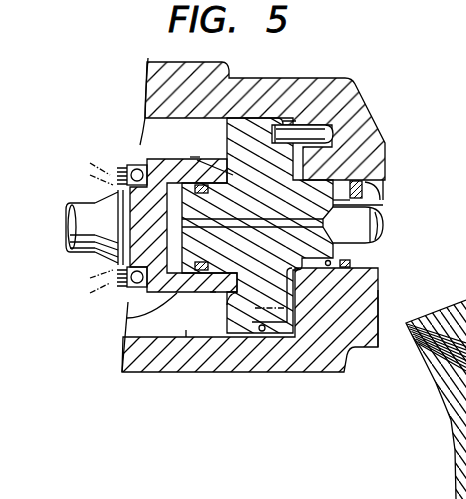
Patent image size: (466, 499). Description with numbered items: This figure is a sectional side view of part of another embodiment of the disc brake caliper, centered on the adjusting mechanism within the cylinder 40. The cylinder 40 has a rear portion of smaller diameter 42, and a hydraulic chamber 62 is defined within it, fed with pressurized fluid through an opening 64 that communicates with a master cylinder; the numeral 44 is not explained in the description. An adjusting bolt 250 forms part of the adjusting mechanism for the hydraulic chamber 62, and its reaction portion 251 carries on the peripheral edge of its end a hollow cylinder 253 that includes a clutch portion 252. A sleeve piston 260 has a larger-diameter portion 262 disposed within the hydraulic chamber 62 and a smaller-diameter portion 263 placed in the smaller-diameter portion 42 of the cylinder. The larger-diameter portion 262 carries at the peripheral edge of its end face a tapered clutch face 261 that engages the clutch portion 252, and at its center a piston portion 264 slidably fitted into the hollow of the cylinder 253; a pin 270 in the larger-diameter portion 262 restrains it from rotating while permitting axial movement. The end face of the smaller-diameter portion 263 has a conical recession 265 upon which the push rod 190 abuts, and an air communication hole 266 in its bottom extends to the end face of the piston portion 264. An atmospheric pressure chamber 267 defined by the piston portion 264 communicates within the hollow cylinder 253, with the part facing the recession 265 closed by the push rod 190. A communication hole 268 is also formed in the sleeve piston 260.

The cylinder 40 is at (152, 360).
The rear portion of smaller diameter 42 is at (330, 262).
The housing cover 44 is at (358, 112).
The hydraulic chamber 62 is at (186, 330).
The opening 64 is at (264, 333).
The push rod 190 is at (370, 220).
The adjusting bolt 250 is at (77, 189).
The reaction portion 251 is at (123, 200).
The clutch portion 252 is at (230, 300).
The hollow cylinder 253 is at (160, 157).
The sleeve piston 260 is at (260, 116).
The clutch face 261 is at (213, 150).
The larger-diameter portion 262 is at (300, 300).
The smaller-diameter portion 263 is at (382, 198).
The piston portion 264 is at (127, 318).
The conical recession 265 is at (372, 212).
The air communication hole 266 is at (213, 292).
The atmospheric pressure chamber 267 is at (170, 229).
The communication hole 268 is at (197, 155).
The pin 270 is at (296, 130).